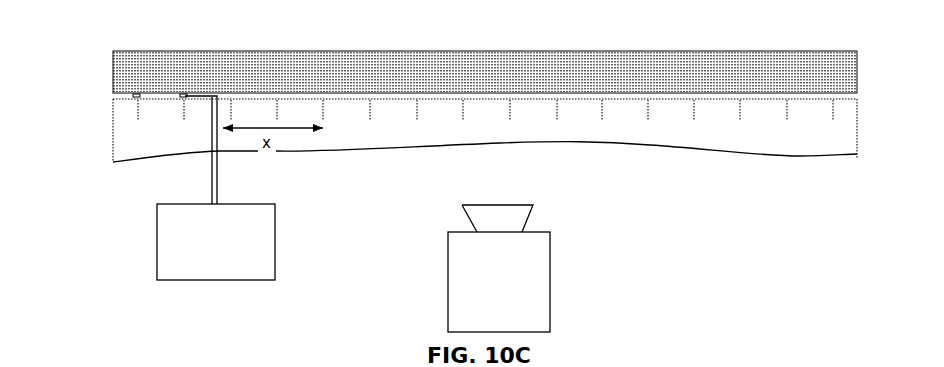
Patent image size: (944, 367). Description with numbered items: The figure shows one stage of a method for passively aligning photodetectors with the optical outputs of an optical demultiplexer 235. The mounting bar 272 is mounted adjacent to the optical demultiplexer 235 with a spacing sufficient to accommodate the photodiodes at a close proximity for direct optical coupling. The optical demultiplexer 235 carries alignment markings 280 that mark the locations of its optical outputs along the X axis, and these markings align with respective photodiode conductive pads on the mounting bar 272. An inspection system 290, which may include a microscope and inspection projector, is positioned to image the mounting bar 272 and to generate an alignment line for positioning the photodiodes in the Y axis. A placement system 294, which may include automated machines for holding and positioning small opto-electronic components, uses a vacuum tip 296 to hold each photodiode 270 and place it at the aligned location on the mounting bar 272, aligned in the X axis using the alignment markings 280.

The optical demultiplexer 235 is at (810, 152).
The photodiode 270 is at (150, 93).
The mounting bar 272 is at (143, 68).
The alignment markings 280 is at (138, 104).
The vacuum tip 296 is at (184, 100).
The placement system 294 is at (275, 248).
The inspection system 290 is at (448, 287).